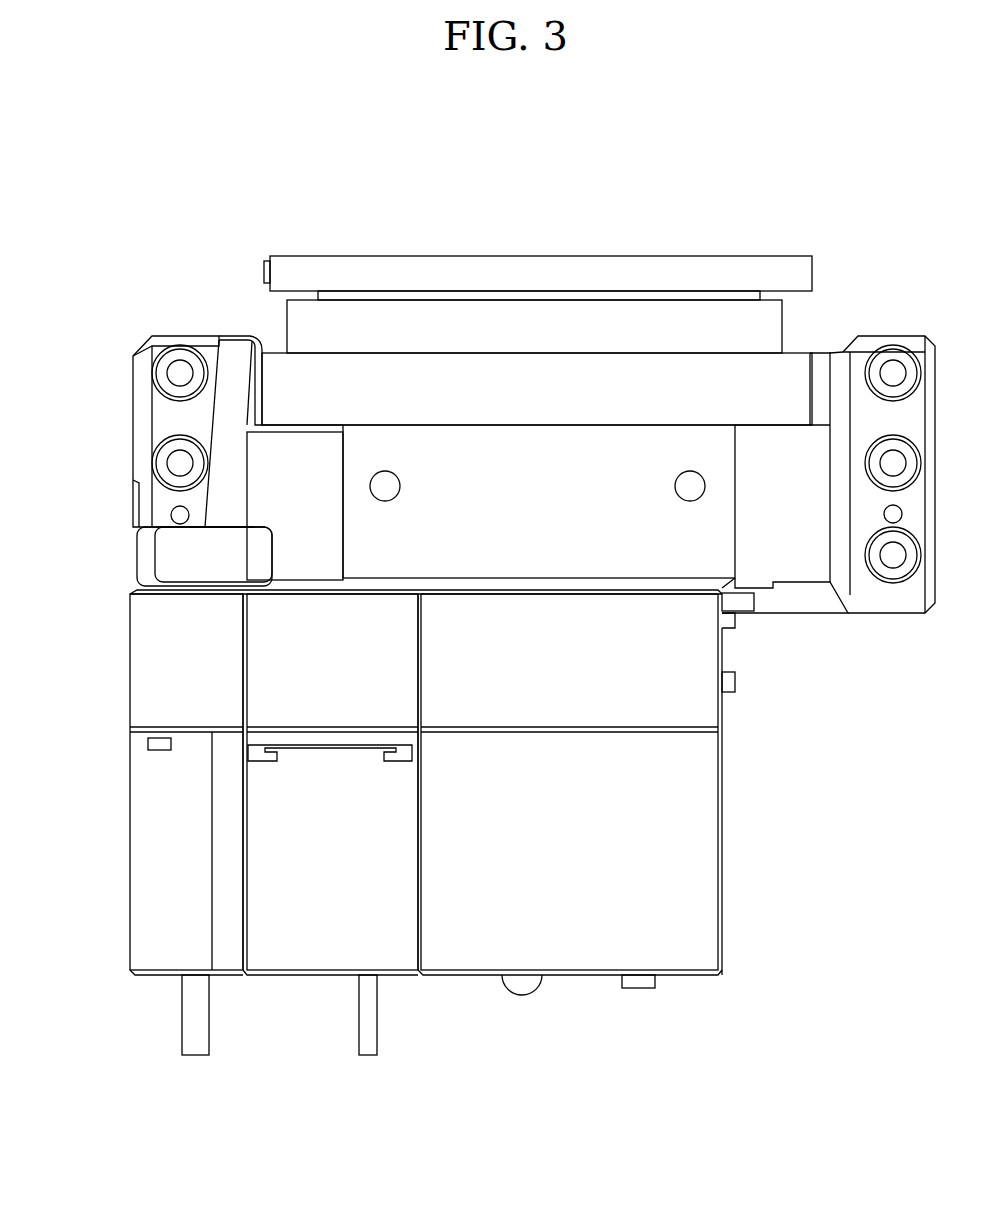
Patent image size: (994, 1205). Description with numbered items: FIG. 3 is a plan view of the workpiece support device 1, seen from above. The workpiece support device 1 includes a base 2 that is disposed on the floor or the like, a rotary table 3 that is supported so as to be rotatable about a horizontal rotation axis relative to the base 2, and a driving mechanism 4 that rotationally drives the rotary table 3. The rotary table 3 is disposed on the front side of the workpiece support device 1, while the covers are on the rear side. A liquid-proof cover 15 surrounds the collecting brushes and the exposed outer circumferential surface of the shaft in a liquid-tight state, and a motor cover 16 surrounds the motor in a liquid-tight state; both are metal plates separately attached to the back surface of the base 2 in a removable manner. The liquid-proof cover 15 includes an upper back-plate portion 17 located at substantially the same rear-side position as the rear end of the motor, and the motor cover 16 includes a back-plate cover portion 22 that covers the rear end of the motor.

The workpiece support device 1 is at (183, 211).
The base 2 is at (133, 395).
The rotary table 3 is at (556, 256).
The driving mechanism 4 is at (97, 775).
The liquid-proof cover 15 is at (722, 826).
The motor cover 16 is at (130, 890).
The upper back-plate portion 17 is at (583, 975).
The back-plate cover portion 22 is at (291, 975).